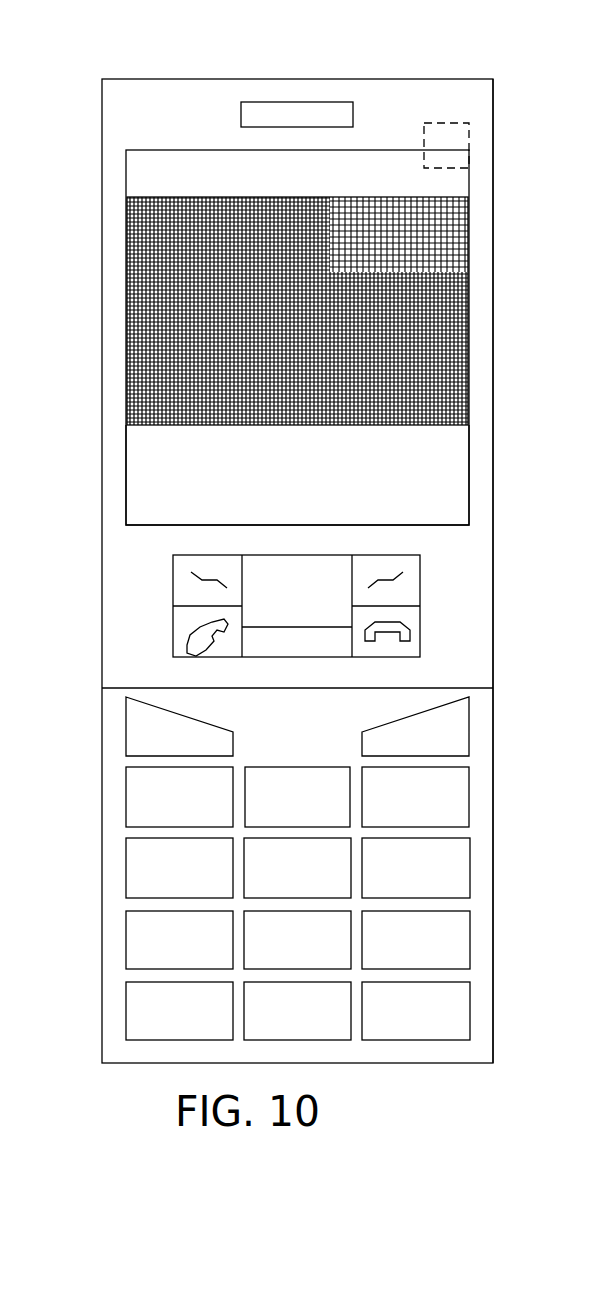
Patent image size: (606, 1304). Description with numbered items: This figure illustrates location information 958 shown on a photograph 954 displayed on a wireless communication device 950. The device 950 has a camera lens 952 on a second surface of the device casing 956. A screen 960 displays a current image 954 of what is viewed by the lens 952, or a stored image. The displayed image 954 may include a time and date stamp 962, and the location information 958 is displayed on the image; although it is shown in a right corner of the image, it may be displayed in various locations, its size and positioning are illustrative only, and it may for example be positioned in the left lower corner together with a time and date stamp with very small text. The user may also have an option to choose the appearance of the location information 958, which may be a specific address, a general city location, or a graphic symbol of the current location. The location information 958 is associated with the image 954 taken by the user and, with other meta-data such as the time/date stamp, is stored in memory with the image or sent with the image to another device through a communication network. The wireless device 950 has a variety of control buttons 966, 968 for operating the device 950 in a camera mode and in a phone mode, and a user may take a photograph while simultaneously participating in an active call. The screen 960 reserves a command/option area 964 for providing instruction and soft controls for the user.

The wireless communication device 950 is at (197, 48).
The camera lens 952 is at (470, 143).
The photograph 954 is at (447, 227).
The device casing 956 is at (493, 347).
The location information 958 is at (465, 398).
The screen 960 is at (468, 483).
The time and date stamp 962 is at (127, 402).
The command/option area 964 is at (145, 470).
The control buttons 966 is at (173, 620).
The control buttons 968 is at (126, 718).